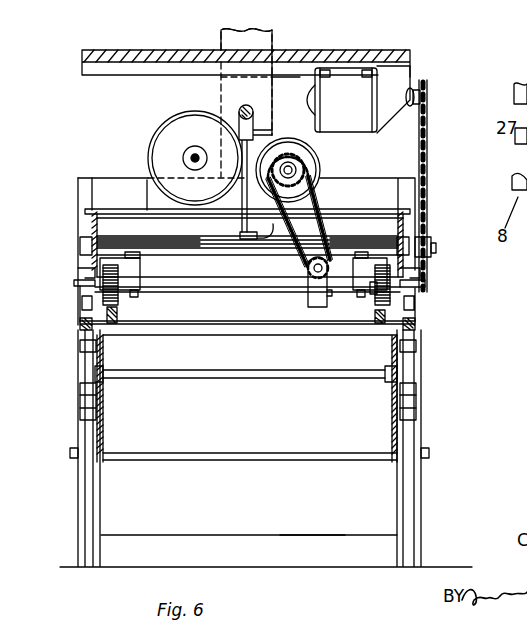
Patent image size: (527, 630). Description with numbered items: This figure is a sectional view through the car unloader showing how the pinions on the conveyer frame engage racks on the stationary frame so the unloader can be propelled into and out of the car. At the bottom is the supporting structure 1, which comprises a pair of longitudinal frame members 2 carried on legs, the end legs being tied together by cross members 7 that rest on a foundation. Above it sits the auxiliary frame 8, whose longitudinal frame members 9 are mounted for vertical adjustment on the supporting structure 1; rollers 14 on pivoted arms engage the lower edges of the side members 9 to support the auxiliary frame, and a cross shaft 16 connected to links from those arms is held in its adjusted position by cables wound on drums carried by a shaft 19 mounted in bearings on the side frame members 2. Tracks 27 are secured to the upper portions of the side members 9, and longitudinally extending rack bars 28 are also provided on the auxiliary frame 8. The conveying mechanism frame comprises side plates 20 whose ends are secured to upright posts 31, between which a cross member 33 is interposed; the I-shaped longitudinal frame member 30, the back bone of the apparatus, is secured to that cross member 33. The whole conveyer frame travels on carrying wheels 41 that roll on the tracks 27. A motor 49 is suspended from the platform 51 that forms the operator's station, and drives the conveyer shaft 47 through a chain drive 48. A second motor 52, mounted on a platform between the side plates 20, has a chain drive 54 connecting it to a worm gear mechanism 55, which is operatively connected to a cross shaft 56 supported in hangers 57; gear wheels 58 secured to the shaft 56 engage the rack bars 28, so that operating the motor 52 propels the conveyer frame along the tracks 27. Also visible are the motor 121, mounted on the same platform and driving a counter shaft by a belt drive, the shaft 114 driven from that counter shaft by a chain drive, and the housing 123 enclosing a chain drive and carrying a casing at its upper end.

The supporting structure 1 is at (420, 515).
The longitudinal frame members 2 is at (90, 420).
The cross members 7 is at (312, 529).
The auxiliary frame 8 is at (418, 322).
The longitudinal frame members 9 is at (80, 308).
The rollers 14 is at (88, 351).
The cross shaft 16 is at (228, 460).
The shaft 19 is at (178, 378).
The side plates 20 is at (90, 232).
The tracks 27 is at (74, 286).
The rack bars 28 is at (78, 318).
The longitudinal frame member 30 is at (273, 235).
The upright posts 31 is at (78, 187).
The cross member 33 is at (120, 178).
The carrying wheels 41 is at (85, 271).
The shaft 47 is at (434, 246).
The chain drive 48 is at (428, 136).
The motor 49 is at (395, 84).
The platform 51 is at (346, 51).
The motor 52 is at (310, 157).
The chain drive 54 is at (328, 183).
The worm gear mechanism 55 is at (320, 306).
The cross shaft 56 is at (213, 294).
The hangers 57 is at (138, 268).
The gear wheels 58 is at (103, 298).
The shaft 114 is at (255, 125).
The motor 121 is at (194, 97).
The housing 123 is at (258, 43).